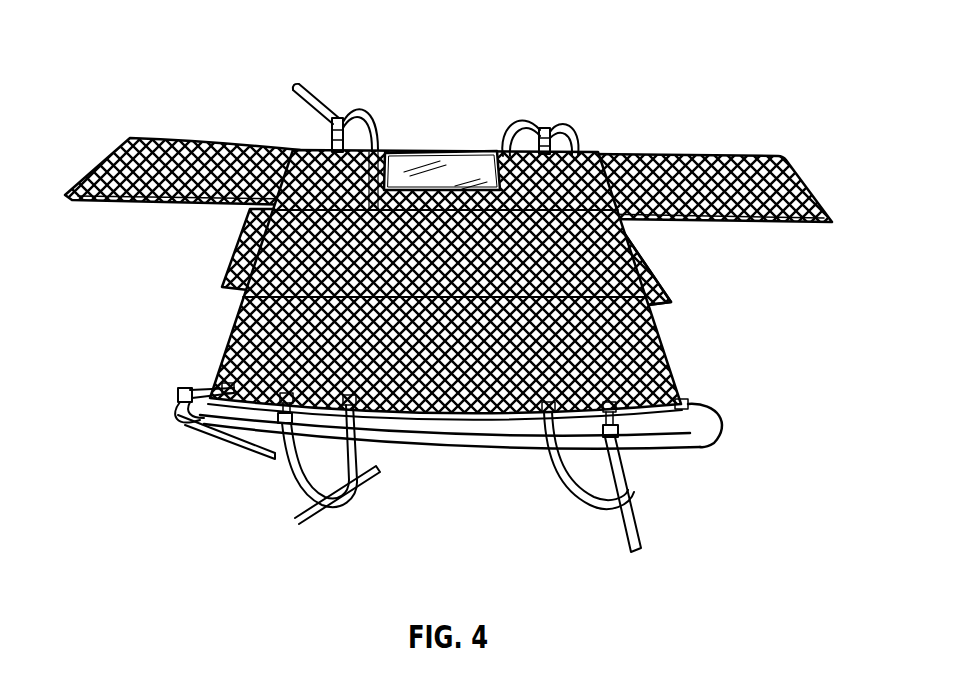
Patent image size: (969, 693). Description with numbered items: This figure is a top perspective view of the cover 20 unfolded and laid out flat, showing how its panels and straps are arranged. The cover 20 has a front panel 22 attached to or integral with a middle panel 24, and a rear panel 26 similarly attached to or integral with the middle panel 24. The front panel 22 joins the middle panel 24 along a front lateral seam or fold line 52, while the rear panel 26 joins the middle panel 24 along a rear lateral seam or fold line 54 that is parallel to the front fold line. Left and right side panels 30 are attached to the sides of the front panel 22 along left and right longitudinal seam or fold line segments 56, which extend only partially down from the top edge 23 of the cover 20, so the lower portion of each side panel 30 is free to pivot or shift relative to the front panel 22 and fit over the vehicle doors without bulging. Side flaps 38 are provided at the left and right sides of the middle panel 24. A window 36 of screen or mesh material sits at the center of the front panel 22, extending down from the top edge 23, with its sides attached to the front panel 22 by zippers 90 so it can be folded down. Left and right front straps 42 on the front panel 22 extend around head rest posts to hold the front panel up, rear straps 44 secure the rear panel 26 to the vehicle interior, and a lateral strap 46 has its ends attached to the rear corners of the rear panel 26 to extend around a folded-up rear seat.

The cover 20 is at (306, 166).
The front panel 22 is at (338, 117).
The top edge 23 is at (384, 148).
The middle panel 24 is at (645, 241).
The rear panel 26 is at (657, 347).
The side panel 30 is at (747, 177).
The window 36 is at (453, 167).
The side flap 38 is at (660, 258).
The front strap 42 is at (562, 123).
The rear strap 44 is at (318, 484).
The lateral strap 46 is at (667, 453).
The front lateral seam or fold line 52 is at (413, 210).
The rear lateral seam or fold line 54 is at (297, 292).
The longitudinal seam or fold line segment 56 is at (287, 252).
The zipper 90 is at (527, 182).